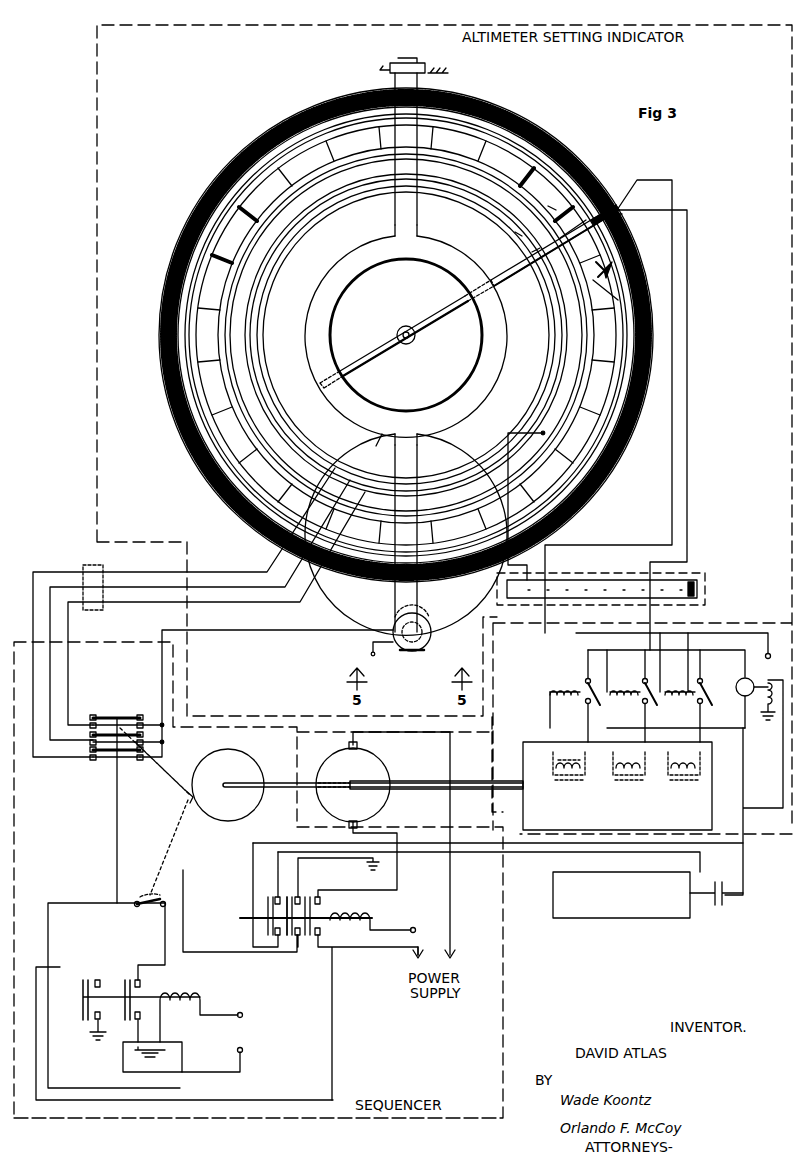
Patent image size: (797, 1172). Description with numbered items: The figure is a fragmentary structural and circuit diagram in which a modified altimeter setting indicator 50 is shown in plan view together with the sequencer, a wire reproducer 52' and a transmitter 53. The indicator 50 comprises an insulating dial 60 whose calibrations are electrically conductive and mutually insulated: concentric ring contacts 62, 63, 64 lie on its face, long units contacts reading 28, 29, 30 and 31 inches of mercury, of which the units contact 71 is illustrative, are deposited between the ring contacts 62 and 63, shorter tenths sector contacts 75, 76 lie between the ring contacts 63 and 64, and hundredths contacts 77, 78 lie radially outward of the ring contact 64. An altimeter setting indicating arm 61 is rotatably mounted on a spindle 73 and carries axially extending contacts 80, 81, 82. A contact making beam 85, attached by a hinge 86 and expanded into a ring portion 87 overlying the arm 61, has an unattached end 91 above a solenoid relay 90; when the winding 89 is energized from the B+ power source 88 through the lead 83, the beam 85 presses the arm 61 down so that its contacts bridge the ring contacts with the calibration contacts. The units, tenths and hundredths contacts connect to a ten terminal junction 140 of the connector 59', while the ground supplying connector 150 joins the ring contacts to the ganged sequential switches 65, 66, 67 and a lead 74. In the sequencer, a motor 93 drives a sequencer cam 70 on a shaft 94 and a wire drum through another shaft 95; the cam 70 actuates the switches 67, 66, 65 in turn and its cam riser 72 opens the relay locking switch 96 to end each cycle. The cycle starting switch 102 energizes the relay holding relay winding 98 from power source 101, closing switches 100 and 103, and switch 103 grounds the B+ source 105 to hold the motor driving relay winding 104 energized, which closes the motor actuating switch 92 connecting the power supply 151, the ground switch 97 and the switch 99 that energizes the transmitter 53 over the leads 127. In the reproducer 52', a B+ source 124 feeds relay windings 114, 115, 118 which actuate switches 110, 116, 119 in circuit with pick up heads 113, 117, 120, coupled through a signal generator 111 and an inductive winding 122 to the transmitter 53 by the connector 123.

The altimeter setting indicator 50 is at (216, 28).
The hinge 86 is at (424, 68).
The ring contact 64 is at (207, 200).
The ring contact 63 is at (212, 230).
The units contact 29 is at (406, 335).
The ring contact 62 is at (278, 258).
The dial 60 is at (290, 319).
The units contact 28 is at (406, 335).
The units contact 71 is at (566, 352).
The contact making beam 85 is at (420, 214).
The ring portion 87 is at (382, 434).
The altimeter setting indicating arm 61 is at (451, 310).
The spindle 73 is at (416, 341).
The contact 81 is at (599, 278).
The tenths sector contact 75 is at (548, 206).
The tenths sector contact 76 is at (560, 233).
The units contact 30 is at (506, 243).
The contact 80 is at (532, 252).
The hundredths contact 77 is at (596, 186).
The hundredths contact 78 is at (622, 214).
The contact 82 is at (628, 236).
The units contact 31 is at (516, 499).
The ten terminal junction 140 is at (431, 614).
The winding 89 is at (433, 630).
The unattached end 91 is at (425, 633).
The solenoid relay 90 is at (432, 647).
The B+ power source 88 is at (366, 652).
The lead 83 is at (276, 636).
The jack-in-plug connector 59' is at (631, 589).
The ground supplying connector 150 is at (83, 568).
The sequential switch 65 is at (86, 720).
The sequential switch 66 is at (90, 740).
The sequential switch 67 is at (90, 755).
The lead 74 is at (116, 795).
The cam riser 72 is at (188, 804).
The sequencer cam 70 is at (244, 765).
The shaft 94 is at (276, 800).
The motor 93 is at (384, 762).
The shaft 95 is at (398, 796).
The wire reproducer 52' is at (617, 798).
The relay winding 114 is at (560, 678).
The relay winding 115 is at (623, 672).
The relay winding 118 is at (672, 680).
The switch 110 is at (586, 706).
The pick up head 117 is at (625, 745).
The switch 116 is at (650, 704).
The switch 119 is at (702, 704).
The B+ power source 124 is at (760, 645).
The signal generator 111 is at (735, 688).
The inductive winding 122 is at (762, 728).
The pick up head 113 is at (553, 765).
The pick up head 120 is at (700, 762).
The transmitter 53 is at (630, 919).
The connector 123 is at (728, 898).
The leads 127 is at (515, 855).
The switch 99 is at (262, 919).
The ground switch 97 is at (290, 897).
The motor actuating switch 92 is at (322, 898).
The motor driving relay winding 104 is at (364, 910).
The B+ potential power source 105 is at (415, 910).
The power supply 151 is at (442, 1000).
The relay locking switch 96 is at (155, 910).
The relay switch 100 is at (138, 980).
The relay holding relay winding 98 is at (165, 990).
The power source 101 is at (258, 1018).
The switch 103 is at (92, 1018).
The cycle starting switch 102 is at (132, 1050).